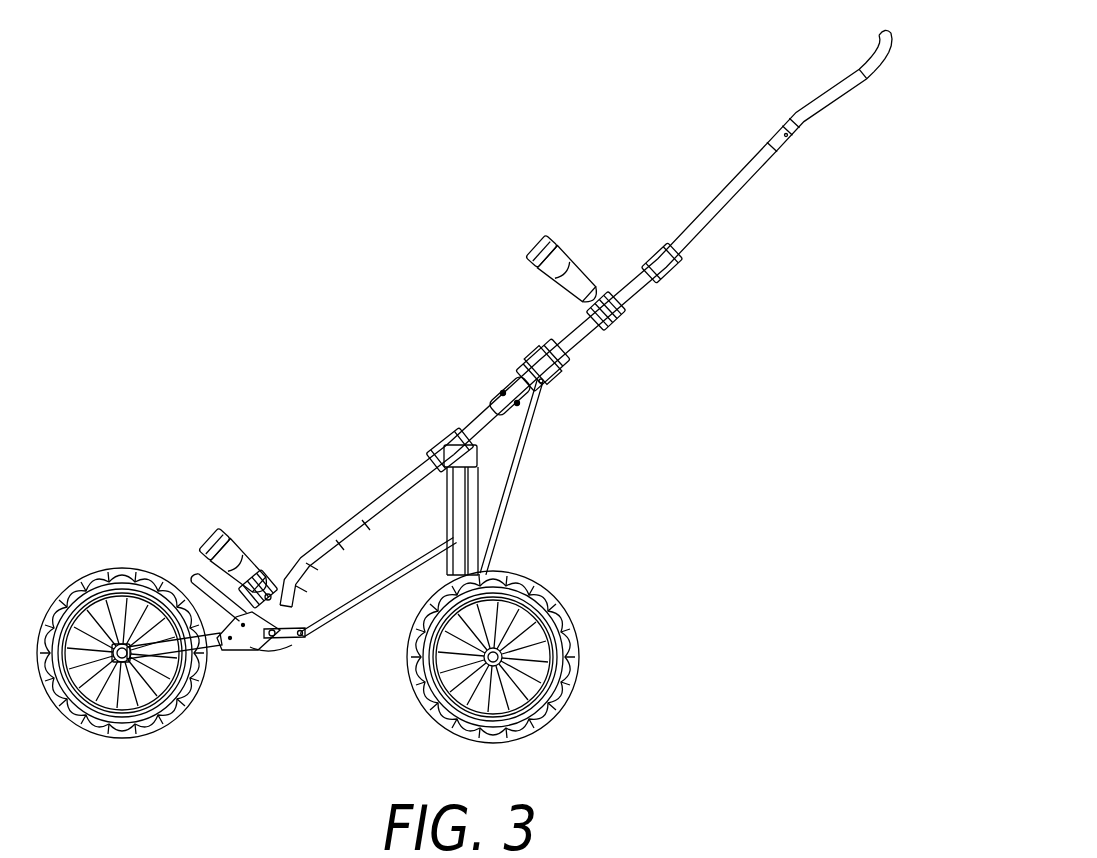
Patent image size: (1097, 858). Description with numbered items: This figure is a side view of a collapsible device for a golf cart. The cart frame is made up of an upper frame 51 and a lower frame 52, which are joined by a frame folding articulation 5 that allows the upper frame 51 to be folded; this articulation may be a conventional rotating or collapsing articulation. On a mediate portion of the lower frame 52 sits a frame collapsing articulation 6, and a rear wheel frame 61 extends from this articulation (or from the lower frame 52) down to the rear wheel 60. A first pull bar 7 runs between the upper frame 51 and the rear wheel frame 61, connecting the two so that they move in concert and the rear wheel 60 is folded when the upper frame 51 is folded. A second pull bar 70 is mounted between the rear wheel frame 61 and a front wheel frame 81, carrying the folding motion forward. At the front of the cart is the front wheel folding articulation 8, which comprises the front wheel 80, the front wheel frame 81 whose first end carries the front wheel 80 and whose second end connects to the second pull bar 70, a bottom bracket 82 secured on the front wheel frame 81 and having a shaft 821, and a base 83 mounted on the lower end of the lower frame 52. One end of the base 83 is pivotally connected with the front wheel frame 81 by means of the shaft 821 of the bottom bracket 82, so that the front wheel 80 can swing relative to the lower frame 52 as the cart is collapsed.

The frame folding articulation 5 is at (533, 367).
The upper frame 51 is at (632, 288).
The lower frame 52 is at (383, 518).
The frame collapsing articulation 6 is at (448, 450).
The first pull bar 7 is at (522, 458).
The rear wheel frame 61 is at (467, 527).
The rear wheel 60 is at (573, 633).
The second pull bar 70 is at (378, 590).
The front wheel 80 is at (93, 570).
The front wheel frame 81 is at (205, 660).
The bottom bracket 82 is at (197, 577).
The base 83 is at (263, 649).
The shaft 821 is at (283, 643).
The front wheel folding articulation 8 is at (260, 668).